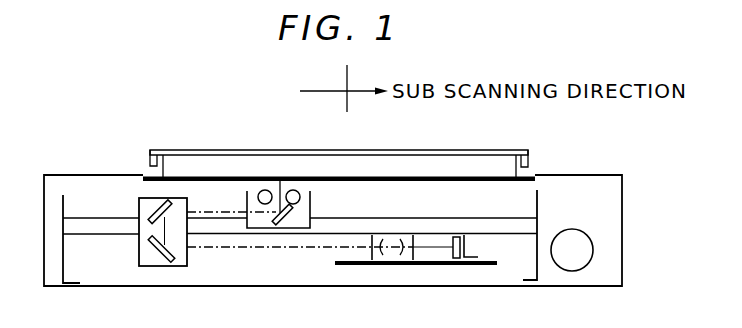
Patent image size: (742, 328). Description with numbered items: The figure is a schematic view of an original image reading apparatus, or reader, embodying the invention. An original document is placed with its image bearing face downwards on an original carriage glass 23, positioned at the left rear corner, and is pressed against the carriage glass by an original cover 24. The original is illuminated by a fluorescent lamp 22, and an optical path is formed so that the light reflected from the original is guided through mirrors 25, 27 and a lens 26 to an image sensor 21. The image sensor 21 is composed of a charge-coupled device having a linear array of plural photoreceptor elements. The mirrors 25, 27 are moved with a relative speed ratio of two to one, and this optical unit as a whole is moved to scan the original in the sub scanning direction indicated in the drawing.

The image sensor 21 is at (466, 240).
The fluorescent lamp 22 is at (291, 189).
The original carriage glass 23 is at (413, 176).
The original cover 24 is at (508, 150).
The mirror 25 is at (159, 203).
The lens 26 is at (394, 240).
The mirror 27 is at (287, 222).